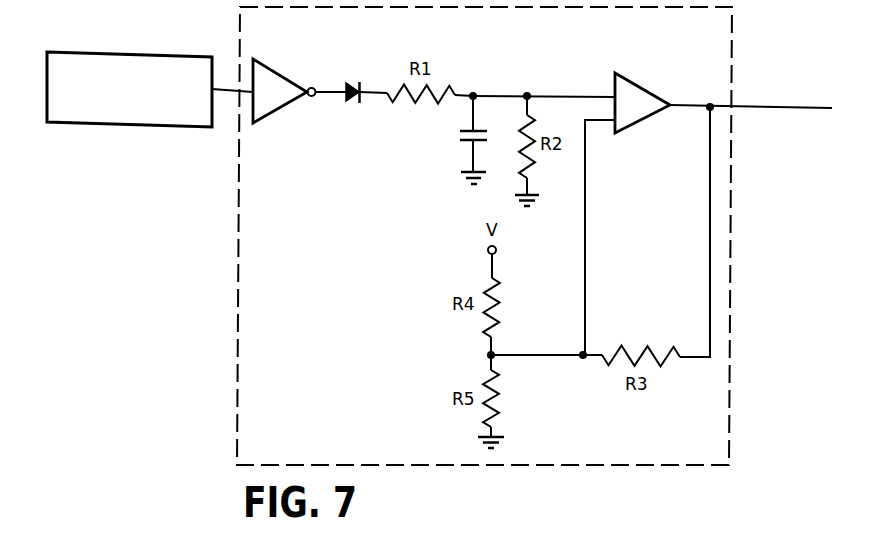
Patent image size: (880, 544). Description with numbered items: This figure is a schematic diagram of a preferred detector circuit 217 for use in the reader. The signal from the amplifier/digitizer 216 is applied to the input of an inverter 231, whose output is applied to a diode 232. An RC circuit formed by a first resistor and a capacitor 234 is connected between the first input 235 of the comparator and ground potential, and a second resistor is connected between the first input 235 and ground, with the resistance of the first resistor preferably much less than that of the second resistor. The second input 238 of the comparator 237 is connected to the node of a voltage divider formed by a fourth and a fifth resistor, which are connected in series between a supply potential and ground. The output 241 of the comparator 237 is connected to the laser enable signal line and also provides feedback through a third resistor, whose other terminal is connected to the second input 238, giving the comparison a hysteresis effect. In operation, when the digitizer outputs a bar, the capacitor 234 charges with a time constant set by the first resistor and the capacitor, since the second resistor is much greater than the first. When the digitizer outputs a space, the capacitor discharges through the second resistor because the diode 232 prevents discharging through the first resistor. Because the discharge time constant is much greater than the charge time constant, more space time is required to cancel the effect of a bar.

The amplifier/digitizer 216 is at (146, 53).
The detector circuit 217 is at (238, 202).
The inverter 231 is at (286, 75).
The diode 232 is at (349, 81).
The capacitor 234 is at (461, 134).
The first input 235 is at (558, 93).
The comparator 237 is at (643, 70).
The second input 238 is at (607, 122).
The output 241 is at (683, 100).